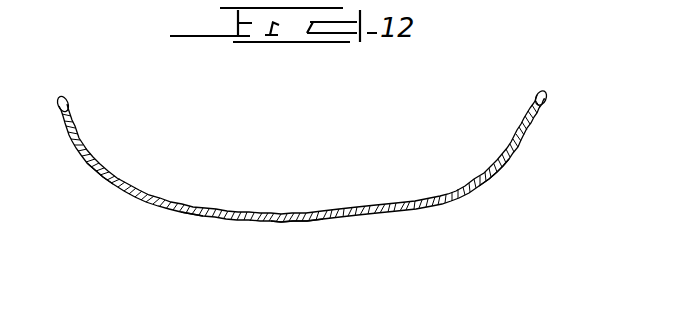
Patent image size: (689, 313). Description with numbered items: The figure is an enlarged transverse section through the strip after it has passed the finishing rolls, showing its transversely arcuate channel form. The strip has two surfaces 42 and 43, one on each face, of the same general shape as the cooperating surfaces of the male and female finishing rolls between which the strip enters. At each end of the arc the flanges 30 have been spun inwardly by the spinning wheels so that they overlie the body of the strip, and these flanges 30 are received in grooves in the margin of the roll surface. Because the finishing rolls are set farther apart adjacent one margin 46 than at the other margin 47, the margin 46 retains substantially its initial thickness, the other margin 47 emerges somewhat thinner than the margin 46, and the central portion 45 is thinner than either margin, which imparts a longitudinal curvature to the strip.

The flanges 30 is at (74, 112).
The surface 42 is at (218, 201).
The surface 43 is at (195, 225).
The central portion 45 is at (297, 218).
The margin 46 is at (102, 173).
The margin 47 is at (500, 162).